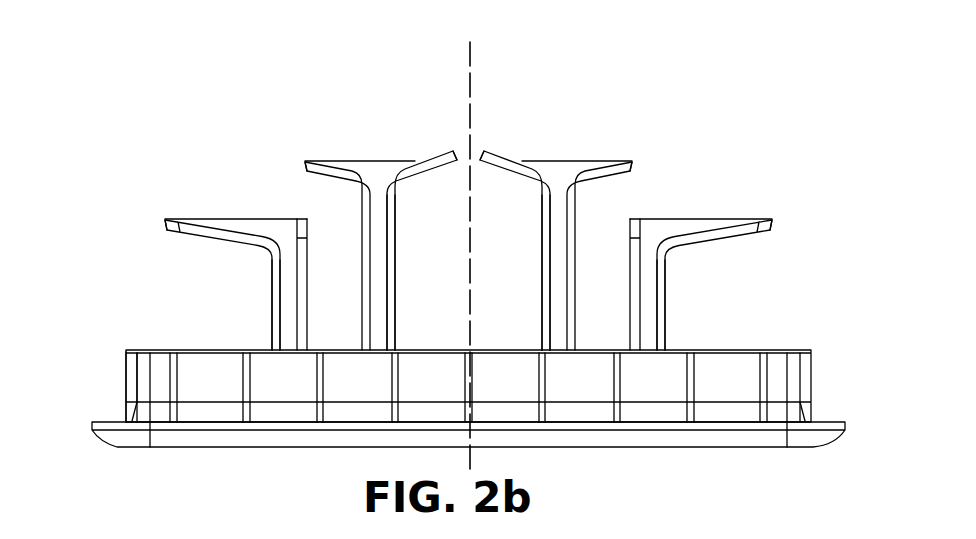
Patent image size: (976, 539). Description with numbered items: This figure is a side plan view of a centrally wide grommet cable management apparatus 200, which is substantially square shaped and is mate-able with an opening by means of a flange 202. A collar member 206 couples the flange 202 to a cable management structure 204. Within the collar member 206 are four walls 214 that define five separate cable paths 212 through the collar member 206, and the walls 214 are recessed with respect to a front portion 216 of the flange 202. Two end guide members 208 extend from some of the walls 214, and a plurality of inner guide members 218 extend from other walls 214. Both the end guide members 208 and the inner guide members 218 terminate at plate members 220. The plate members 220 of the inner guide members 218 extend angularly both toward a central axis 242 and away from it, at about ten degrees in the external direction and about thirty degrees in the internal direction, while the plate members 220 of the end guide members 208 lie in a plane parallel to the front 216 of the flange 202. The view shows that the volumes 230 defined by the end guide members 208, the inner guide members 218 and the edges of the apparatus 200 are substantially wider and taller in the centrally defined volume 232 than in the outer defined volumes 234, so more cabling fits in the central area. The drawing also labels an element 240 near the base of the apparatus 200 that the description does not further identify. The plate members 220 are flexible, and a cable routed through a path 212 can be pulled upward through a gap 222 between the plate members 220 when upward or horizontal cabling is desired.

The cable management apparatus 200 is at (678, 80).
The flange 202 is at (807, 440).
The cable management structure 204 is at (124, 214).
The collar member 206 is at (131, 375).
The end guide member 208 is at (233, 223).
The separate cable path 212 is at (216, 328).
The wall 214 is at (272, 298).
The front portion of flange 216 is at (667, 438).
The inner guide member 218 is at (368, 158).
The plate member 220 is at (182, 228).
The gap 222 is at (268, 164).
The volume 230 is at (193, 336).
The centrally defined volume 232 is at (526, 209).
The outer defined volume 234 is at (251, 309).
The support post 240 is at (393, 385).
The axis 242 is at (471, 55).